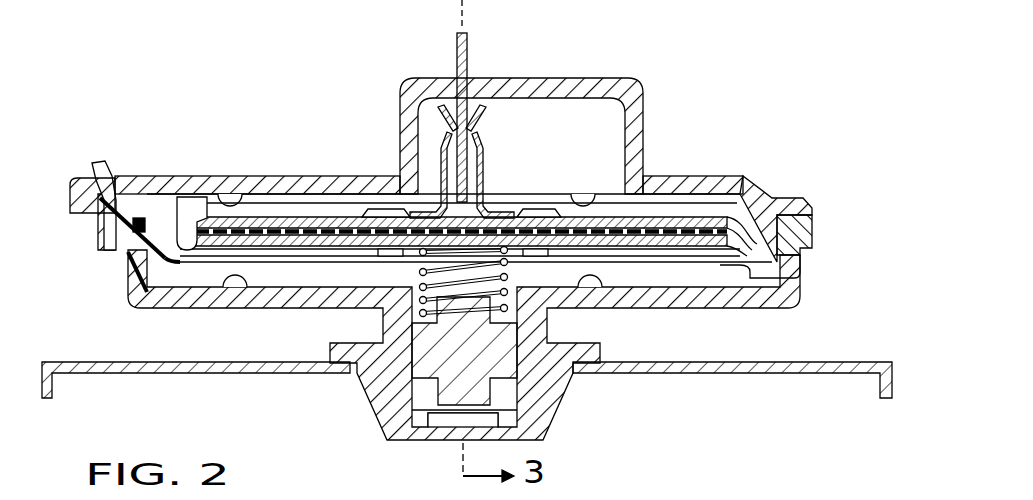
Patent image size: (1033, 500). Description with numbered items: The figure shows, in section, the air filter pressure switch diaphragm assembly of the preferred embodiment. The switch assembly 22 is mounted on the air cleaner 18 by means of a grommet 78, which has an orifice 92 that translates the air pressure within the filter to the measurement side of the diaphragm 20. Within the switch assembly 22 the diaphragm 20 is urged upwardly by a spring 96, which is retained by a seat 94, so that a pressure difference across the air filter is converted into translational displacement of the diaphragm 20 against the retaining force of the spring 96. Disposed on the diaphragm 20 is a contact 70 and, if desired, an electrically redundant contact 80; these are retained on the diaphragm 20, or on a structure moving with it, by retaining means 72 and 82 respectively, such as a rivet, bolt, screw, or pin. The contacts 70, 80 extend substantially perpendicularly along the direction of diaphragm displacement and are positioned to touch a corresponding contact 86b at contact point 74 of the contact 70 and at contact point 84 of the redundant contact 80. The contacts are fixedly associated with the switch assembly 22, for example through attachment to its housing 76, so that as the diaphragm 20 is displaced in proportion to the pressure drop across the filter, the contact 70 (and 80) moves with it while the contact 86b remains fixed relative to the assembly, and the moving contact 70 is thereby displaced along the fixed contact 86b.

The air cleaner 18 is at (790, 362).
The diaphragm 20 is at (800, 278).
The switch assembly 22 is at (70, 195).
The contact 70 is at (430, 167).
The retaining means 72 is at (392, 198).
The contact point 74 is at (455, 128).
The housing 76 is at (603, 78).
The grommet 78 is at (598, 350).
The redundant contact 80 is at (500, 165).
The retaining means 82 is at (550, 204).
The contact point 84 is at (473, 131).
The contact 86b is at (465, 56).
The orifice 92 is at (462, 438).
The seat 94 is at (419, 365).
The spring 96 is at (415, 268).